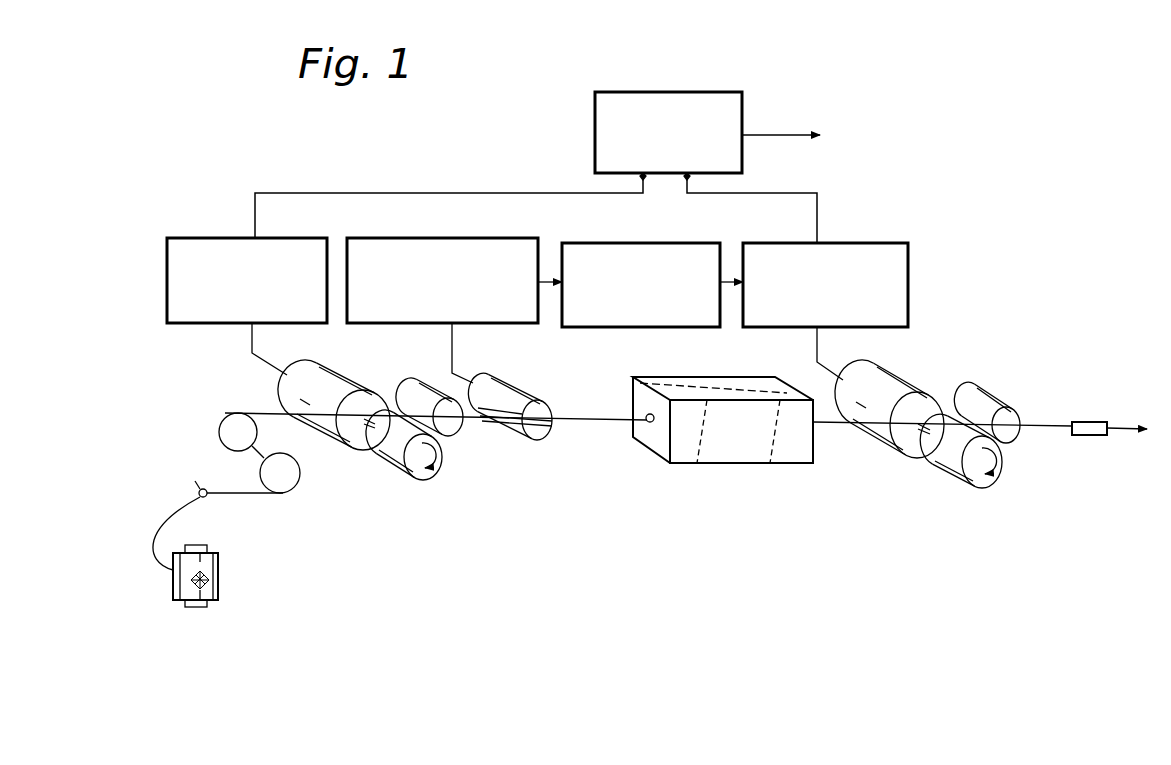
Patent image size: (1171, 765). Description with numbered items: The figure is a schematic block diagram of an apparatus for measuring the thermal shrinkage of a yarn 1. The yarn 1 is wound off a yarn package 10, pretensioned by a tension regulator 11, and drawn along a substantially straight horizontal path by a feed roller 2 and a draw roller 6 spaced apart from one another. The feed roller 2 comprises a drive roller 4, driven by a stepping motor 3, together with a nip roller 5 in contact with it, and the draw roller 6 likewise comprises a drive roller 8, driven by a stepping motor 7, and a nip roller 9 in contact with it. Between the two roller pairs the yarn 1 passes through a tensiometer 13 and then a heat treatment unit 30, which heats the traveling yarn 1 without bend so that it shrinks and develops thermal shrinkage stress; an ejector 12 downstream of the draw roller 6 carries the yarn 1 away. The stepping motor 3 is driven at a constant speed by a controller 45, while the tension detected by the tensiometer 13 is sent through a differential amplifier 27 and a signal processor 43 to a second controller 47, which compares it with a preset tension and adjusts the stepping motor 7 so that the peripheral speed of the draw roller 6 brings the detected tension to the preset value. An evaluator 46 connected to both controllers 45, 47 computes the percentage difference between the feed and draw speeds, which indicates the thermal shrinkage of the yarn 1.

The yarn 1 is at (590, 414).
The feed roller 2 is at (383, 470).
The stepping motor 3 is at (333, 373).
The drive roller 4 is at (399, 477).
The nip roller 5 is at (428, 388).
The draw roller 6 is at (937, 472).
The stepping motor 7 is at (903, 347).
The drive roller 8 is at (958, 487).
The nip roller 9 is at (987, 395).
The yarn package 10 is at (219, 576).
The tension regulator 11 is at (210, 457).
The ejector 12 is at (1089, 421).
The tensiometer 13 is at (498, 430).
The differential amplifier 27 is at (438, 238).
The heat treatment unit 30 is at (740, 463).
The signal processor 43 is at (642, 244).
The controller 45 is at (207, 237).
The evaluator 46 is at (668, 93).
The controller 47 is at (910, 263).